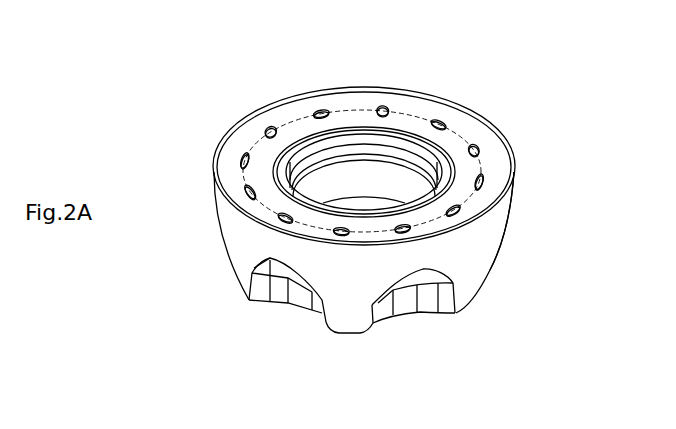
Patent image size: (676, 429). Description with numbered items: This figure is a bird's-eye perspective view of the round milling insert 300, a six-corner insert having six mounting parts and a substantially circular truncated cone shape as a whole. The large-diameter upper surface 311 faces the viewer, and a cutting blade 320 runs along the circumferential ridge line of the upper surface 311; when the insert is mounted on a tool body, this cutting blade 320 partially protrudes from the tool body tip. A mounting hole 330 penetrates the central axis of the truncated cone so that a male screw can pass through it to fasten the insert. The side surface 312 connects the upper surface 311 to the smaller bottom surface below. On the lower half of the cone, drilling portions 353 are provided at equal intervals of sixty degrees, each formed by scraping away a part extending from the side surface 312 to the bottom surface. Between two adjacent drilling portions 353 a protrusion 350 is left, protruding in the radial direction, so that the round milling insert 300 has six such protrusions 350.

The round milling insert 300 is at (236, 42).
The upper surface 311 is at (415, 108).
The side surface 312 is at (490, 230).
The cutting blade 320 is at (510, 140).
The mounting hole 330 is at (357, 176).
The protrusion 350 is at (347, 322).
The drilling portion 353 is at (286, 314).